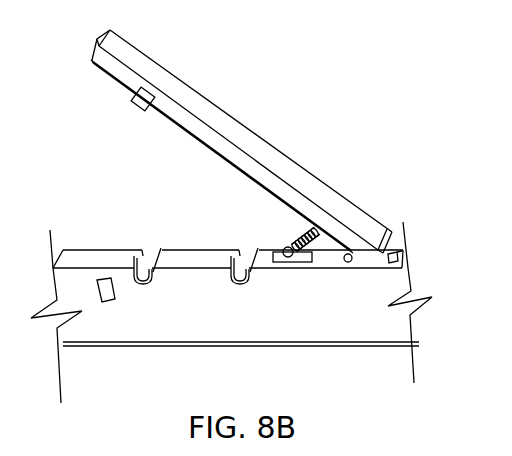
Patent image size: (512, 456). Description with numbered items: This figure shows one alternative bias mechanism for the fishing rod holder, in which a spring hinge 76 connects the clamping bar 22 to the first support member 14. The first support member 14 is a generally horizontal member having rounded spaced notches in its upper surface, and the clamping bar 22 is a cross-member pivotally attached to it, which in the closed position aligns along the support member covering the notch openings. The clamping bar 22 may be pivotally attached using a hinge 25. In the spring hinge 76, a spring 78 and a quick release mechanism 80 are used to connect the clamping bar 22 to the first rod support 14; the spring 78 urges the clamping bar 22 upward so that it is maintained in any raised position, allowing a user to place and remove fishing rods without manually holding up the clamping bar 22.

The first support member 14 is at (155, 308).
The clamping bar 22 is at (190, 95).
The hinge 25 is at (349, 261).
The spring hinge 76 is at (253, 215).
The spring 78 is at (304, 231).
The quick release mechanism 80 is at (322, 238).